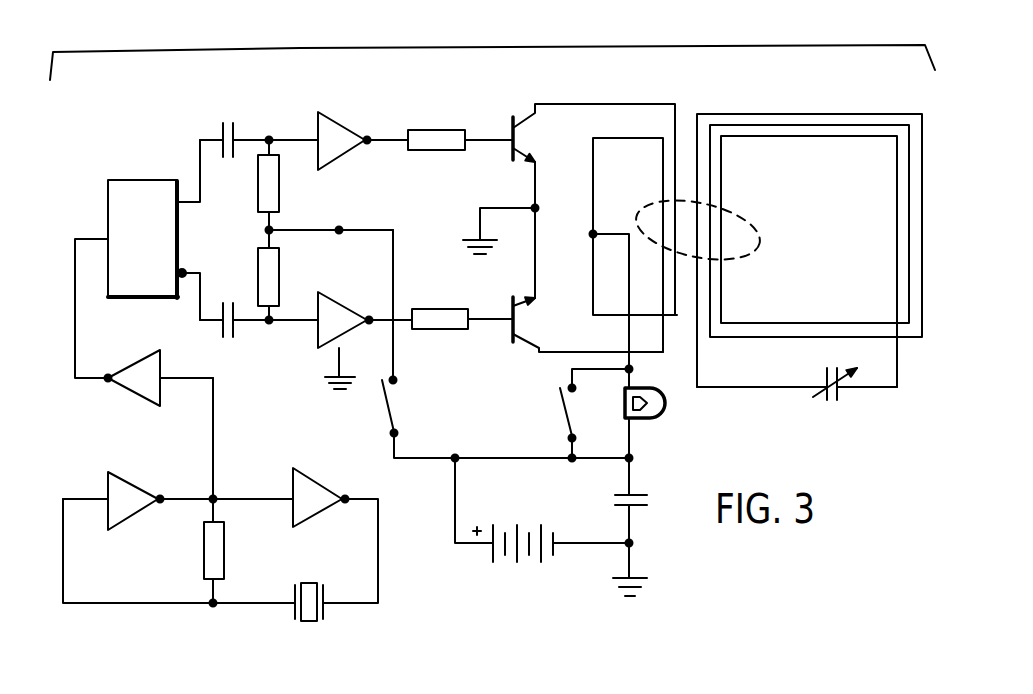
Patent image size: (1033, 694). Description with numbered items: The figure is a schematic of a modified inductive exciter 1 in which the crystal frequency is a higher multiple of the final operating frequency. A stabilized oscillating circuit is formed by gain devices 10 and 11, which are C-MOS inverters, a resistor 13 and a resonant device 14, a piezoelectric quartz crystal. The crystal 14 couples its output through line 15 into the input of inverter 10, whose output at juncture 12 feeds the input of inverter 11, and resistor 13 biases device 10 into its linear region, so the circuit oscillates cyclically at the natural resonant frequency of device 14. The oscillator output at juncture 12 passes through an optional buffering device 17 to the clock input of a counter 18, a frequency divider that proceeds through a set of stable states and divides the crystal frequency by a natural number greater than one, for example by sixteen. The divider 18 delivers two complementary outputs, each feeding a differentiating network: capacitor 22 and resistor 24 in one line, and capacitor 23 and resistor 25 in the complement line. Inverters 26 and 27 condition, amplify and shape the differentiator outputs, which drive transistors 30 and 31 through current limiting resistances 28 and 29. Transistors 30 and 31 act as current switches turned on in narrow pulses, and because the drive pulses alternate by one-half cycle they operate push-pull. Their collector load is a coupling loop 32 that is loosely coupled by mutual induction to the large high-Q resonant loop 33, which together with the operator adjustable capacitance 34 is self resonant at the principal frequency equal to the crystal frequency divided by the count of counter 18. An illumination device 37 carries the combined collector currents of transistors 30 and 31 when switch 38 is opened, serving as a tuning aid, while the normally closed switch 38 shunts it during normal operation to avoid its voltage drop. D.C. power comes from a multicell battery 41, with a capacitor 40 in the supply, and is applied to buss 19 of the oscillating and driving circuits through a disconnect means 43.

The instrument housing 1 is at (588, 38).
The gain device 10 is at (158, 476).
The gain device 11 is at (333, 463).
The juncture 12 is at (220, 468).
The resistor 13 is at (226, 566).
The resonant device 14 is at (330, 587).
The line 15 is at (168, 600).
The buffering device 17 is at (130, 364).
The counter 18 is at (100, 178).
The buss 19 is at (403, 237).
The capacitor 22 is at (242, 127).
The capacitor 23 is at (217, 299).
The resistor 24 is at (283, 208).
The resistor 25 is at (284, 275).
The inverter 26 is at (346, 121).
The inverter 27 is at (349, 307).
The current limiting resistance 28 is at (436, 125).
The current limiting resistance 29 is at (445, 300).
The transistor 30 is at (503, 122).
The transistor 31 is at (520, 347).
The coupling loop 32 is at (593, 163).
The resonant loop 33 is at (769, 105).
The variable capacitance 34 is at (820, 378).
The illumination device 37 is at (648, 424).
The switch 38 is at (560, 430).
The capacitor 40 is at (660, 500).
The battery 41 is at (532, 518).
The disconnect means 43 is at (400, 428).